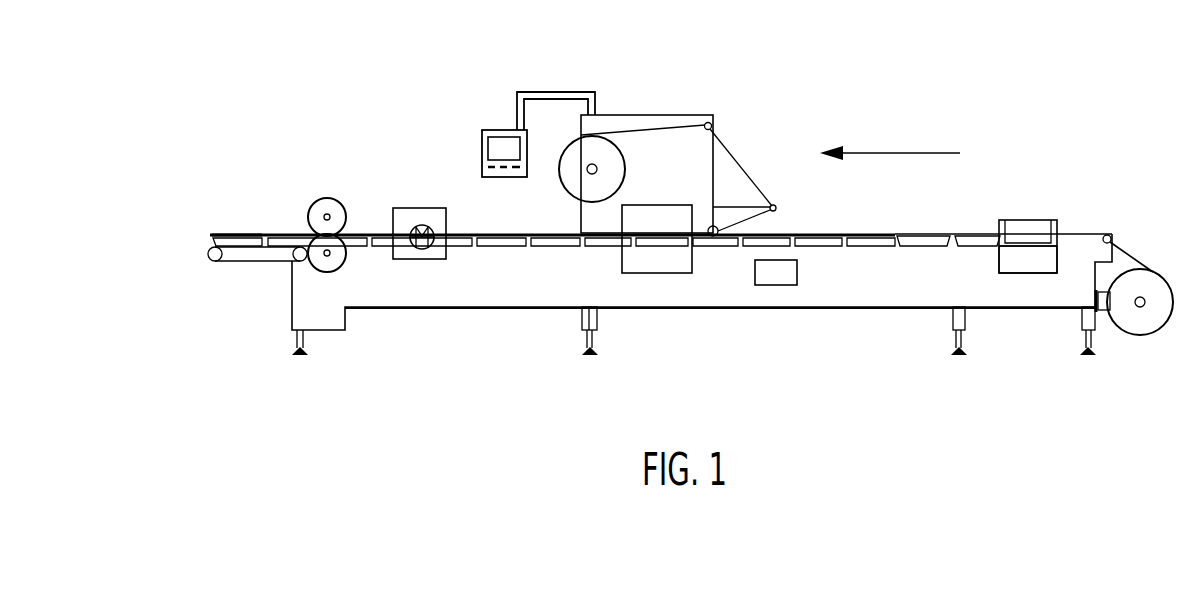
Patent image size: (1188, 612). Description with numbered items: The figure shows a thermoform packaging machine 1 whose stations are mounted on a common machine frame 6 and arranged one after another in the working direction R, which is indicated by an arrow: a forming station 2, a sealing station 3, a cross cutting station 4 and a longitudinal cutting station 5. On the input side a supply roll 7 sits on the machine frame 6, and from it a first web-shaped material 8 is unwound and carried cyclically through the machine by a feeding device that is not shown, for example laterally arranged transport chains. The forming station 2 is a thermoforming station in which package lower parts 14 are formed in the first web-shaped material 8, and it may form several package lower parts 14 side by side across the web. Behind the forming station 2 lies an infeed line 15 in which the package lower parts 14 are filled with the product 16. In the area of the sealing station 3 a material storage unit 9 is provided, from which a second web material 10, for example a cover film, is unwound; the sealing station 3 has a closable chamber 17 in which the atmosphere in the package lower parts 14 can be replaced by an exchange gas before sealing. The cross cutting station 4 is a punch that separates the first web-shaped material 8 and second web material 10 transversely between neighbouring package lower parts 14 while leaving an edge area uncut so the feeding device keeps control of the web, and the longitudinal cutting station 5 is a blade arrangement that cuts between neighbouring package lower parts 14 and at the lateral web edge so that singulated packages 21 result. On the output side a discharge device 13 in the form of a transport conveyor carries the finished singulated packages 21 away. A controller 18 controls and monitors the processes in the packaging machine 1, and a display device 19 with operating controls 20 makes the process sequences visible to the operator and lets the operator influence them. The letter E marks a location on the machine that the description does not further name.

The thermoform packaging machine 1 is at (912, 46).
The forming station 2 is at (1033, 227).
The sealing station 3 is at (643, 217).
The cross cutting station 4 is at (408, 212).
The longitudinal cutting station 5 is at (326, 190).
The machine frame 6 is at (572, 314).
The supply roll 7 is at (1152, 277).
The first web-shaped material 8 is at (1128, 248).
The material storage unit 9 is at (575, 185).
The second web material 10 is at (677, 120).
The discharge device 13 is at (243, 262).
The package lower parts 14 is at (1020, 248).
The infeed line 15 is at (842, 258).
The product 16 is at (885, 235).
The closable chamber 17 is at (653, 265).
The controller 18 is at (776, 280).
The display device 19 is at (498, 130).
The operating controls 20 is at (483, 160).
The singulated packages 21 is at (242, 232).
The input position E is at (978, 232).
The working direction R is at (890, 143).